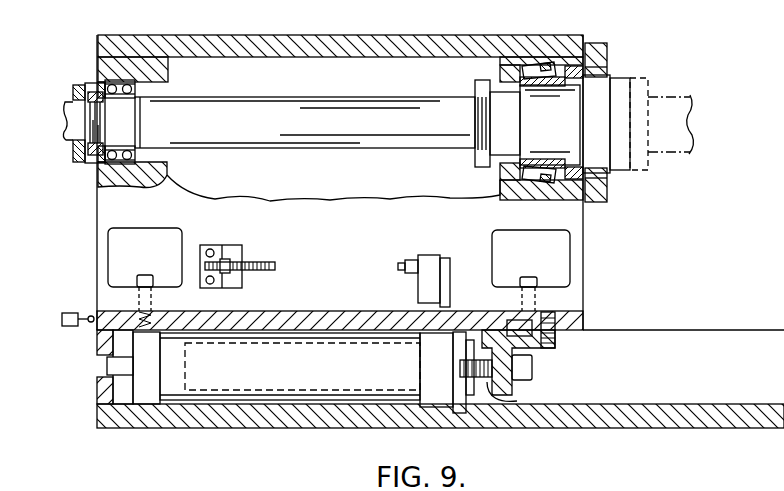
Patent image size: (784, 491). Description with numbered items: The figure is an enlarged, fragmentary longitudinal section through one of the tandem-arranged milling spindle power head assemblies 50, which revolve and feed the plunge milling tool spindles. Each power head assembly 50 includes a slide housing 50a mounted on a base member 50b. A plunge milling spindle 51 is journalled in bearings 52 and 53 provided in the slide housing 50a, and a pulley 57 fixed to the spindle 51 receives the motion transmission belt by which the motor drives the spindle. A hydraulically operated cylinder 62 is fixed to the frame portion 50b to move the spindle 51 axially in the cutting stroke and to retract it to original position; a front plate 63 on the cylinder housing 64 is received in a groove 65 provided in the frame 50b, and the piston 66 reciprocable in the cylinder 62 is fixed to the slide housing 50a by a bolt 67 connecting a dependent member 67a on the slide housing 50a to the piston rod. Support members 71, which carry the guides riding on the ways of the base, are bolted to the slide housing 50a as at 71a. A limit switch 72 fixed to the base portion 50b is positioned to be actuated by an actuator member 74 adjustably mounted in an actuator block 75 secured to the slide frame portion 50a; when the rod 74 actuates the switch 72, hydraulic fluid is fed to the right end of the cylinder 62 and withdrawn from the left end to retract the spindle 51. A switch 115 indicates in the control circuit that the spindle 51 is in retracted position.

The milling spindle power head assembly 50 is at (589, 271).
The slide housing 50a is at (567, 219).
The base member 50b is at (703, 424).
The plunge milling spindle 51 is at (281, 100).
The bearing 52 is at (129, 86).
The bearing 53 is at (545, 68).
The pulley 57 is at (87, 163).
The hydraulically operated cylinder 62 is at (145, 404).
The front plate 63 is at (467, 402).
The cylinder housing 64 is at (310, 401).
The groove 65 is at (450, 410).
The piston 66 is at (517, 401).
The bolt 67 is at (526, 368).
The dependent member 67a is at (557, 341).
The support member 71 is at (578, 325).
The bolt 71a is at (140, 275).
The limit switch 72 is at (426, 262).
The actuator member 74 is at (258, 262).
The actuator block 75 is at (236, 280).
The switch 115 is at (72, 327).